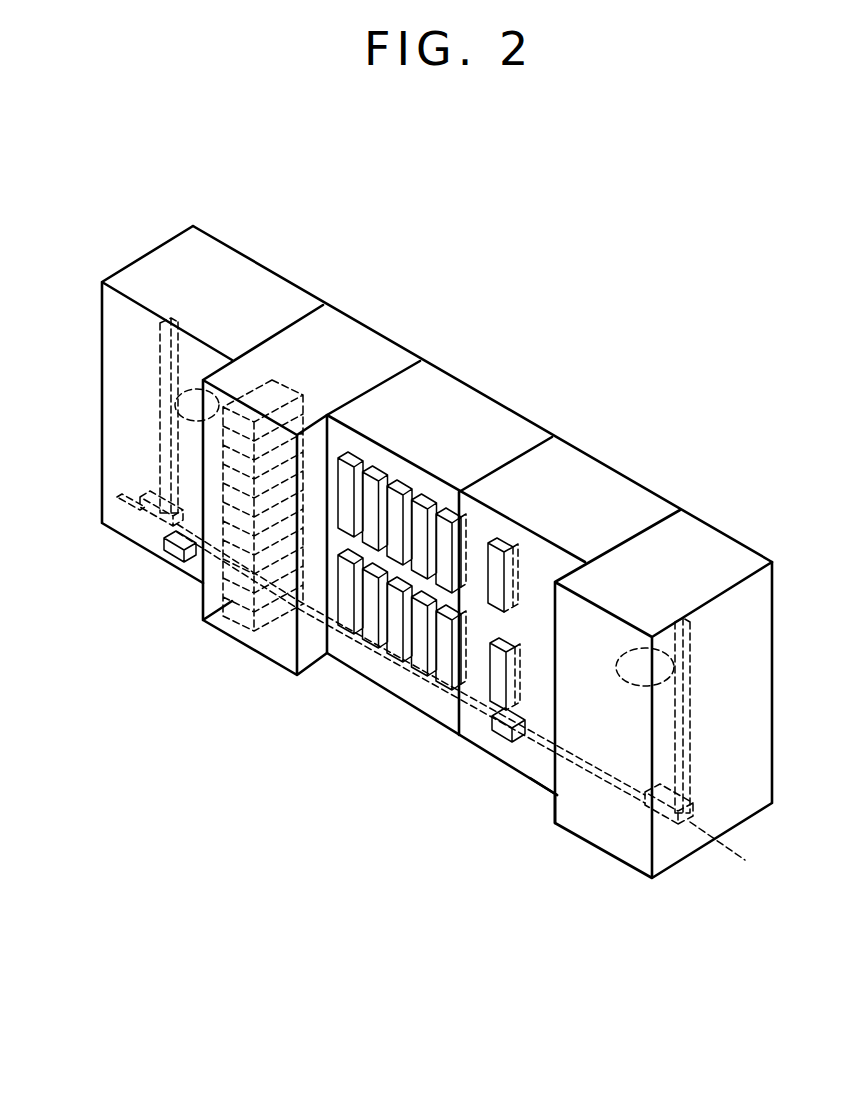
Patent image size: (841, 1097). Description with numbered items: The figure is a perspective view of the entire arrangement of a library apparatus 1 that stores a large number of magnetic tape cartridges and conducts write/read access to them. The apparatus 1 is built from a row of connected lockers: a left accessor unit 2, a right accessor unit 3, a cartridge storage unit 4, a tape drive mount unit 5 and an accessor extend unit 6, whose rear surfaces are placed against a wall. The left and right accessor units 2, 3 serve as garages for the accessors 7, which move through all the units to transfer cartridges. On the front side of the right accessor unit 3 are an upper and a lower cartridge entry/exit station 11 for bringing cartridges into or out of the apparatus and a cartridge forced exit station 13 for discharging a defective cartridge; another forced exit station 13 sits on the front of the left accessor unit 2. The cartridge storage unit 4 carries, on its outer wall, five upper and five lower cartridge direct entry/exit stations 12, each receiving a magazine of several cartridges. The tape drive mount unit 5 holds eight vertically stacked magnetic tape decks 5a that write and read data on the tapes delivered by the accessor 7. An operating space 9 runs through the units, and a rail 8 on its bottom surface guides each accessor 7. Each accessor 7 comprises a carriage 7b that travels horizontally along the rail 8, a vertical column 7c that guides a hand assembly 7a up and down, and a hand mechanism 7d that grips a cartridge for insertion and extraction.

The library apparatus 1 is at (446, 324).
The left accessor unit 2 is at (241, 268).
The right accessor unit 3 is at (628, 495).
The cartridge storage unit 4 is at (517, 437).
The tape drive mount unit 5 is at (368, 350).
The magnetic tape deck 5a is at (283, 378).
The accessor extend unit 6 is at (729, 548).
The accessor robot 7 is at (158, 337).
The hand assembly 7a is at (189, 387).
The carriage 7b is at (138, 513).
The vertical column 7c is at (167, 448).
The hand mechanism 7d is at (167, 423).
The rail 8 is at (555, 804).
The operating space 9 is at (553, 782).
The cartridge entry/exit station 11 is at (500, 548).
The cartridge direct entry/exit station 12 is at (380, 476).
The cartridge forced exit station 13 is at (170, 542).